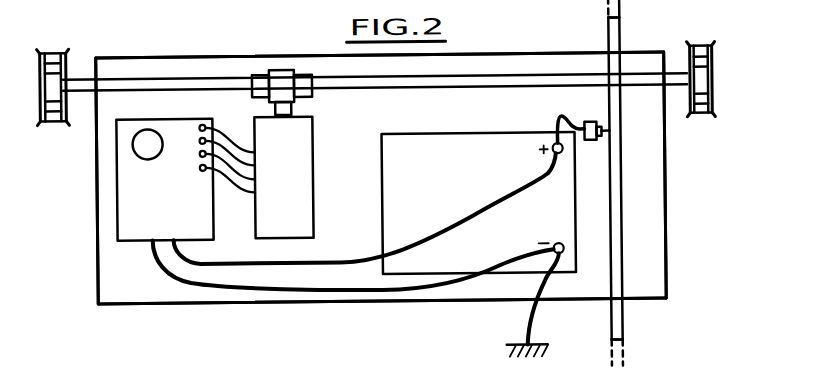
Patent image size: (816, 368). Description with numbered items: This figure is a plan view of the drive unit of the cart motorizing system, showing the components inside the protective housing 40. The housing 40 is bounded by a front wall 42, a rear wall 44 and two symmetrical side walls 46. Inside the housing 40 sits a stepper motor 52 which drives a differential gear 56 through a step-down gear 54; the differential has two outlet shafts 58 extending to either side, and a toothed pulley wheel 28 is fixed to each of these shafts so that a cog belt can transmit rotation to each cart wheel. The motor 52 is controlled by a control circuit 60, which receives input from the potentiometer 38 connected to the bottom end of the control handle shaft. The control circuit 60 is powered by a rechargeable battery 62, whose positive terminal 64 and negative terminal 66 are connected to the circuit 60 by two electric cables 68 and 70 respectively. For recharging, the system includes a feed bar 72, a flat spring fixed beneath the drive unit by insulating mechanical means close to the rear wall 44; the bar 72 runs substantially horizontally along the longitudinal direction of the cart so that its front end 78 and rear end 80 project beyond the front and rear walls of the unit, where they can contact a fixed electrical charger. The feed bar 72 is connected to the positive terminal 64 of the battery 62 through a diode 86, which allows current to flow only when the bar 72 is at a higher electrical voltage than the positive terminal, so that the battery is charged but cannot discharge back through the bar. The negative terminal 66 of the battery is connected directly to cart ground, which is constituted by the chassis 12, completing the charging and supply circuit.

The chassis 12 is at (538, 347).
The toothed pulley wheel 28 is at (38, 57).
The potentiometer 38 is at (142, 142).
The protective housing 40 is at (93, 281).
The front wall 42 is at (389, 302).
The rear wall 44 is at (474, 54).
The side walls 46 is at (97, 210).
The stepper motor 52 is at (302, 185).
The step-down gear 54 is at (292, 104).
The differential gear 56 is at (269, 68).
The outlet shafts 58 is at (178, 82).
The control circuit 60 is at (178, 200).
The rechargeable battery 62 is at (447, 173).
The positive terminal 64 is at (578, 164).
The negative terminal 66 is at (564, 248).
The electric cable 68 is at (362, 262).
The electric cable 70 is at (294, 290).
The feed bar 72 is at (612, 261).
The front end 78 is at (622, 338).
The rear end 80 is at (614, 37).
The diode 86 is at (588, 123).